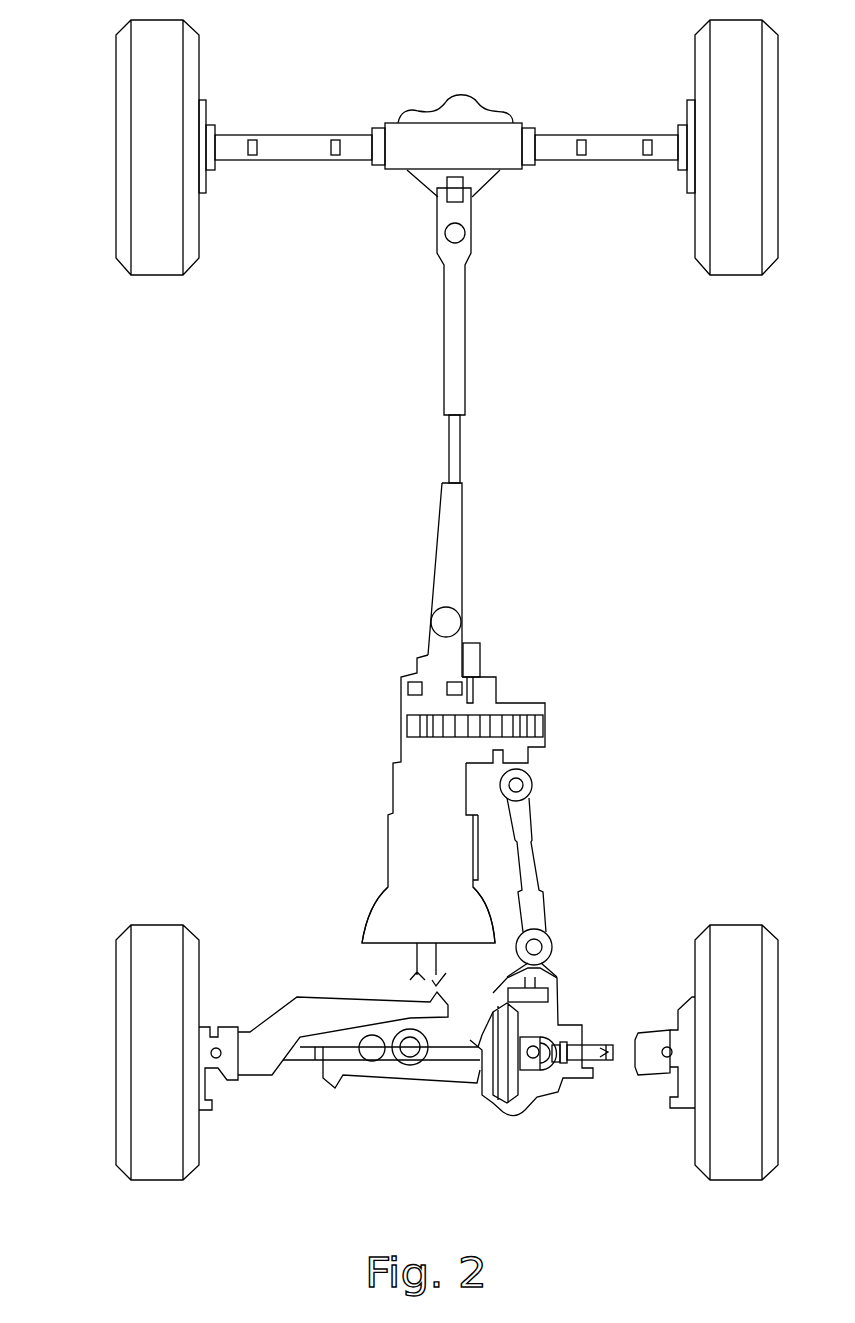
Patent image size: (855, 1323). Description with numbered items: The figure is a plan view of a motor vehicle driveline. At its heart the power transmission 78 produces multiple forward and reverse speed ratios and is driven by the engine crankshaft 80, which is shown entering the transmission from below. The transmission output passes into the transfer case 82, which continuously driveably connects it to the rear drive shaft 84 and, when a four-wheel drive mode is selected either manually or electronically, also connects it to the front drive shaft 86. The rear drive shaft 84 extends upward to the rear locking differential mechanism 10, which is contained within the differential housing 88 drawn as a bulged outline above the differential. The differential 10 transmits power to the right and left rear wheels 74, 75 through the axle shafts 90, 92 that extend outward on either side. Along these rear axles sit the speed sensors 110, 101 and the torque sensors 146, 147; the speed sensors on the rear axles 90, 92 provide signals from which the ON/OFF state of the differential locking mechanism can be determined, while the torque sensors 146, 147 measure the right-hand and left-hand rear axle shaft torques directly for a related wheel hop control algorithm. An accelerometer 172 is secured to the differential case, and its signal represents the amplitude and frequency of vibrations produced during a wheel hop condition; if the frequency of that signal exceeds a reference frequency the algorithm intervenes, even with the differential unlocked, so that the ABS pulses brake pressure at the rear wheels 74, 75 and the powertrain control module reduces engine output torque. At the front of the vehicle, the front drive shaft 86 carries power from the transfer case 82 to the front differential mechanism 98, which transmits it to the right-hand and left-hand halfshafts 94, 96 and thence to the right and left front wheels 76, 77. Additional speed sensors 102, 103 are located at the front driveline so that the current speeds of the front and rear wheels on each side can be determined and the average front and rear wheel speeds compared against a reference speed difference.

The rear locking differential mechanism 10 is at (420, 135).
The right rear wheel 74 is at (157, 277).
The left rear wheel 75 is at (738, 265).
The right front wheel 76 is at (153, 935).
The left front wheel 77 is at (728, 938).
The power transmission 78 is at (385, 918).
The engine crankshaft 80 is at (420, 950).
The transfer case 82 is at (412, 785).
The rear drive shaft 84 is at (451, 377).
The front drive shaft 86 is at (537, 915).
The differential housing 88 is at (462, 102).
The axle shaft 90 is at (309, 153).
The axle shaft 92 is at (610, 150).
The right-hand halfshaft 94 is at (307, 1052).
The left-hand halfshaft 96 is at (580, 1058).
The front differential mechanism 98 is at (493, 1100).
The speed sensor 101 is at (640, 146).
The speed sensor 102 is at (318, 1052).
The speed sensor 103 is at (595, 1052).
The wheel speed sensor 110 is at (258, 146).
The torque sensor 146 is at (341, 146).
The torque sensor 147 is at (583, 142).
The accelerometer 172 is at (445, 183).